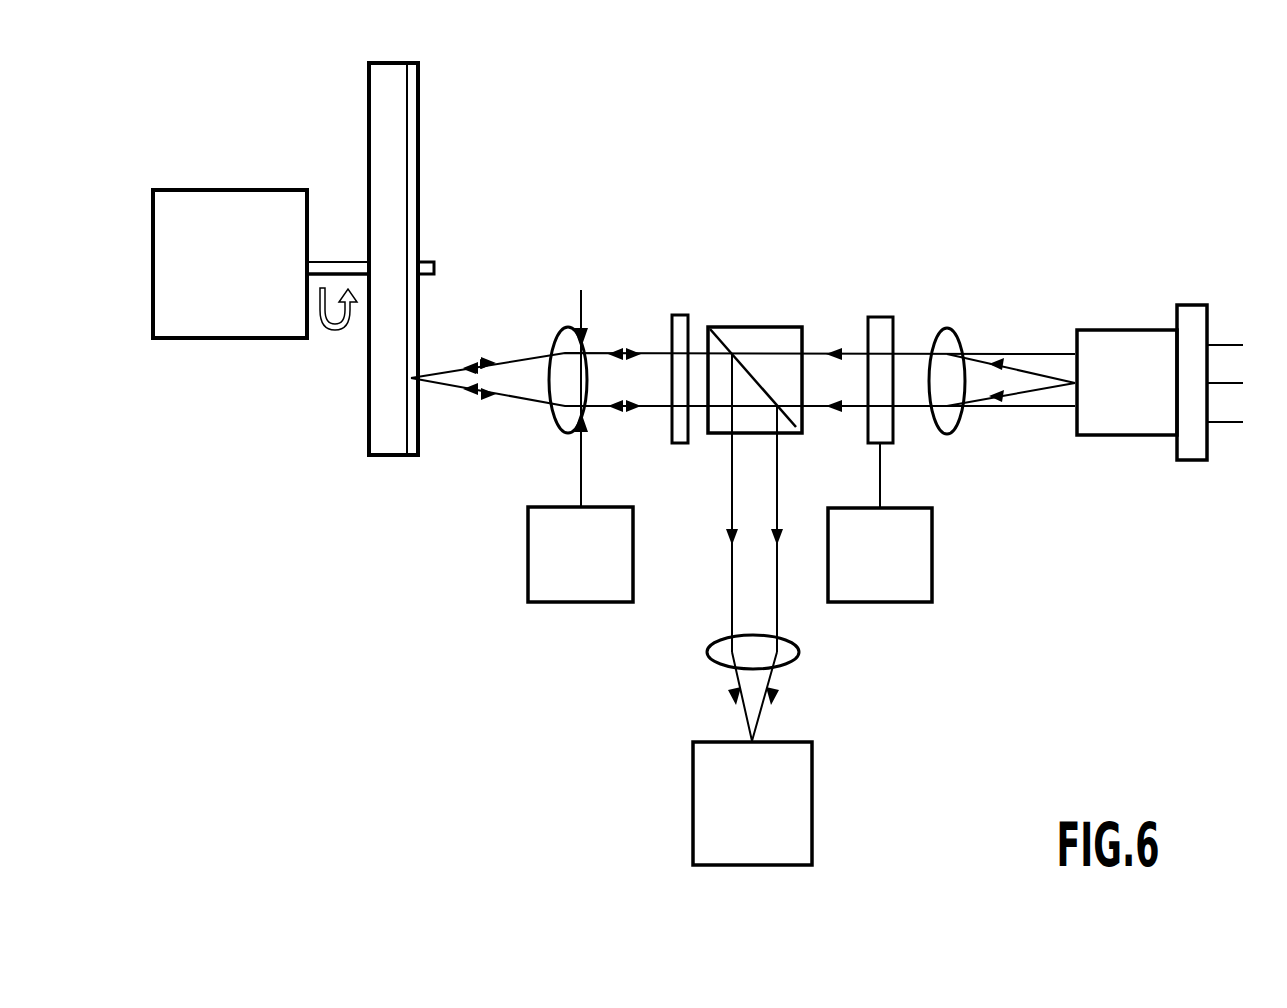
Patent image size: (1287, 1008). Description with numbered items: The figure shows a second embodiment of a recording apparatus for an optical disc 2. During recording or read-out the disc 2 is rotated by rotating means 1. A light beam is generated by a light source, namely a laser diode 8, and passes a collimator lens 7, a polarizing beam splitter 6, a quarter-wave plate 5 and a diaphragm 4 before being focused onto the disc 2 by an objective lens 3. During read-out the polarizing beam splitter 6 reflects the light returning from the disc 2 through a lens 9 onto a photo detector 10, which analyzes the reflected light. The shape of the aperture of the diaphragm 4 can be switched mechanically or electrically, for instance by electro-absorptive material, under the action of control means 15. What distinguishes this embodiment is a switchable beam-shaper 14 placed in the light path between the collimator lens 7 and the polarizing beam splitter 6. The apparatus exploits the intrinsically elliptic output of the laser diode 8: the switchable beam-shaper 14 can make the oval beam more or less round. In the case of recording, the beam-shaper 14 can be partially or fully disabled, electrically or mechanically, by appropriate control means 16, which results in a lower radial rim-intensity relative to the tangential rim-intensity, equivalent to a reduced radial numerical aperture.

The rotating means 1 is at (230, 189).
The disc 2 is at (418, 128).
The objective lens 3 is at (566, 326).
The diaphragm 4 is at (583, 308).
The quarter-wave plate 5 is at (678, 313).
The polarizing beam splitter 6 is at (754, 327).
The collimator lens 7 is at (950, 328).
The laser diode 8 is at (1133, 330).
The lens 9 is at (800, 650).
The photo detector 10 is at (812, 800).
The switchable beam-shaper 14 is at (879, 316).
The control means 15 is at (528, 551).
The control means 16 is at (932, 554).